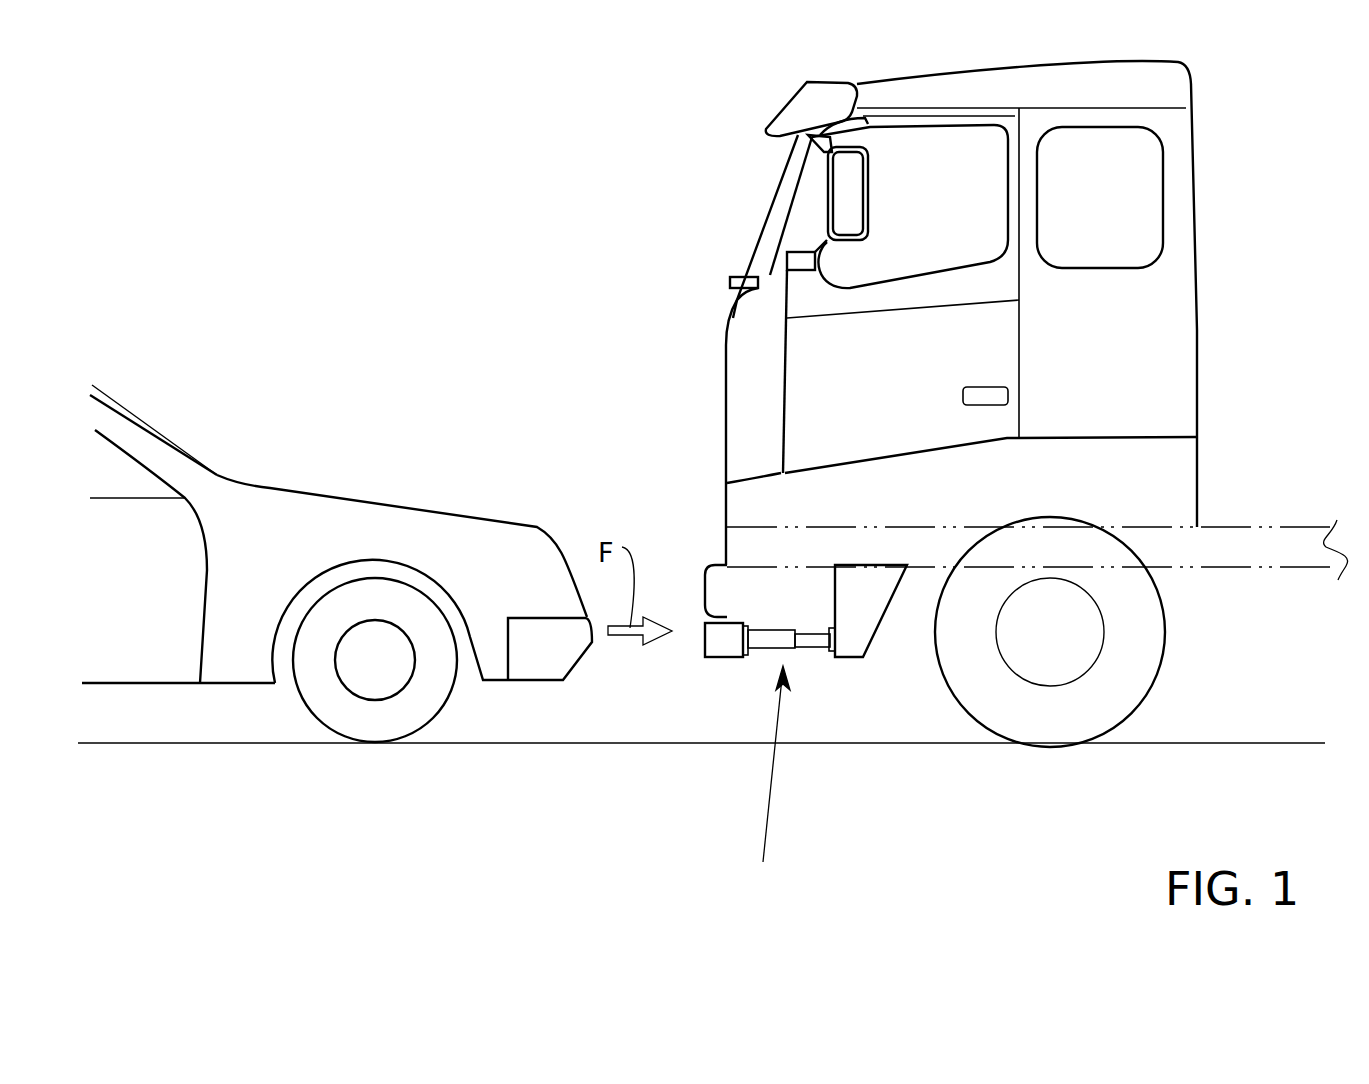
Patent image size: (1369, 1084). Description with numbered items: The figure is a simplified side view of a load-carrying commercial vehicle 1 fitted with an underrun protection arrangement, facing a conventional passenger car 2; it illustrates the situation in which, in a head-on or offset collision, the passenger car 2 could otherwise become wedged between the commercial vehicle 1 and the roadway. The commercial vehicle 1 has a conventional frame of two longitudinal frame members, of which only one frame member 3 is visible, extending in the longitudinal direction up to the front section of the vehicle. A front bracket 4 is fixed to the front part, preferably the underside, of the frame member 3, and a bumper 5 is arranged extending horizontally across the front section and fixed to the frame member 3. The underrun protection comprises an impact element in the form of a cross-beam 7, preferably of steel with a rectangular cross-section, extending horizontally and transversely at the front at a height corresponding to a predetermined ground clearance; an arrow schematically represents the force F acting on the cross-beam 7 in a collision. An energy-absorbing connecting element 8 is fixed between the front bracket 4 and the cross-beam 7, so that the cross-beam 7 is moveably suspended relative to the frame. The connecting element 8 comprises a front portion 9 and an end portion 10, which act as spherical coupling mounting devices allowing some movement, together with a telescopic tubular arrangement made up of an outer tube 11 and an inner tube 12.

The commercial vehicle 1 is at (1182, 205).
The passenger car 2 is at (255, 502).
The frame member 3 is at (1230, 543).
The front bracket 4 is at (870, 614).
The bumper 5 is at (703, 577).
The impact element 7 is at (721, 655).
The energy-absorbing connecting element 8 is at (763, 862).
The front portion 9 is at (744, 657).
The end portion 10 is at (832, 657).
The outer tube 11 is at (765, 655).
The inner tube 12 is at (813, 655).